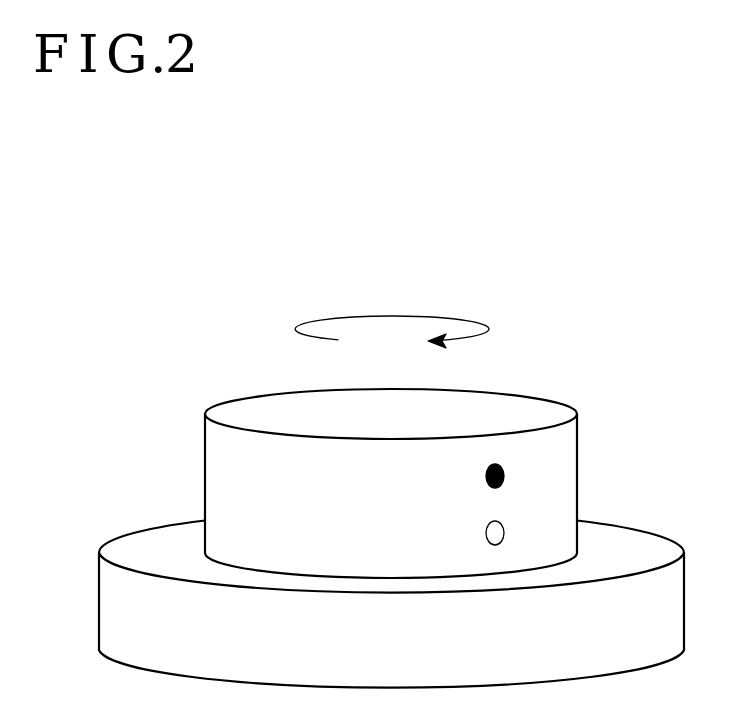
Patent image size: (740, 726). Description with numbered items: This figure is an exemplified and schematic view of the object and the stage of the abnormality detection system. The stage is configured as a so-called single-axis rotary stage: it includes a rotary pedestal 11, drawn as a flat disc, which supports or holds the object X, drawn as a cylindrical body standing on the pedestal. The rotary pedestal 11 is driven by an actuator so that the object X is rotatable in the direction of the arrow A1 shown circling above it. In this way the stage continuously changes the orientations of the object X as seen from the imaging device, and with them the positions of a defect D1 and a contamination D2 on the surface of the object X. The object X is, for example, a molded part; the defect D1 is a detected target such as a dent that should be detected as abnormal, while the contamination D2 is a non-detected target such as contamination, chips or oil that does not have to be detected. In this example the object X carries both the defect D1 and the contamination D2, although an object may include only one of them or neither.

The rotary pedestal 11 is at (139, 527).
The object X is at (253, 396).
The arrow A1 is at (393, 314).
The defect D1 is at (503, 477).
The contamination D2 is at (504, 533).